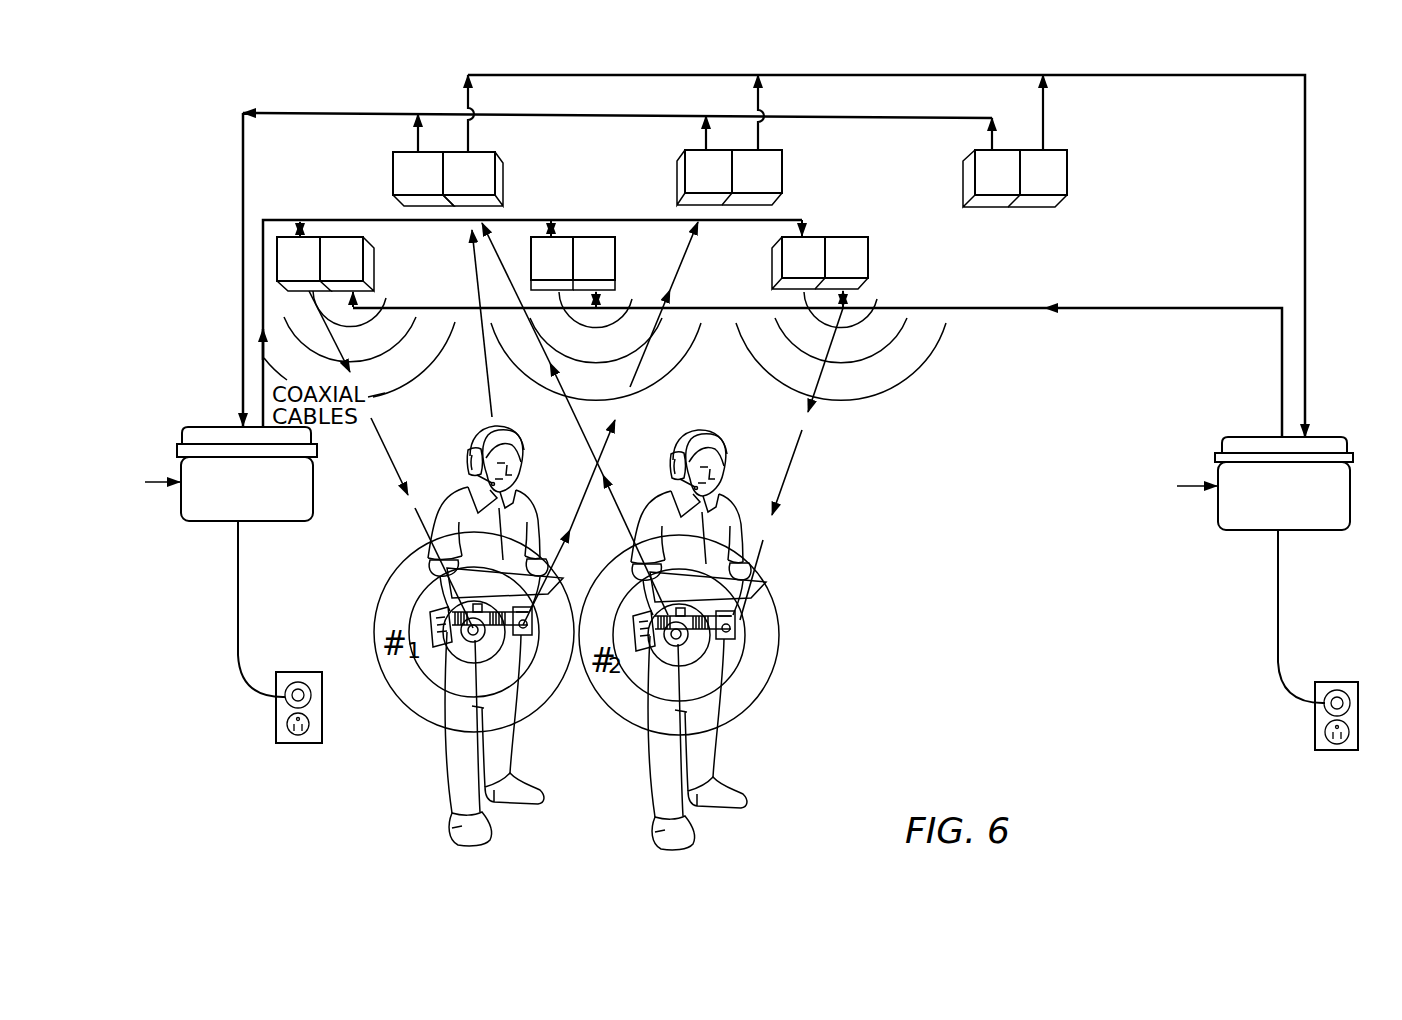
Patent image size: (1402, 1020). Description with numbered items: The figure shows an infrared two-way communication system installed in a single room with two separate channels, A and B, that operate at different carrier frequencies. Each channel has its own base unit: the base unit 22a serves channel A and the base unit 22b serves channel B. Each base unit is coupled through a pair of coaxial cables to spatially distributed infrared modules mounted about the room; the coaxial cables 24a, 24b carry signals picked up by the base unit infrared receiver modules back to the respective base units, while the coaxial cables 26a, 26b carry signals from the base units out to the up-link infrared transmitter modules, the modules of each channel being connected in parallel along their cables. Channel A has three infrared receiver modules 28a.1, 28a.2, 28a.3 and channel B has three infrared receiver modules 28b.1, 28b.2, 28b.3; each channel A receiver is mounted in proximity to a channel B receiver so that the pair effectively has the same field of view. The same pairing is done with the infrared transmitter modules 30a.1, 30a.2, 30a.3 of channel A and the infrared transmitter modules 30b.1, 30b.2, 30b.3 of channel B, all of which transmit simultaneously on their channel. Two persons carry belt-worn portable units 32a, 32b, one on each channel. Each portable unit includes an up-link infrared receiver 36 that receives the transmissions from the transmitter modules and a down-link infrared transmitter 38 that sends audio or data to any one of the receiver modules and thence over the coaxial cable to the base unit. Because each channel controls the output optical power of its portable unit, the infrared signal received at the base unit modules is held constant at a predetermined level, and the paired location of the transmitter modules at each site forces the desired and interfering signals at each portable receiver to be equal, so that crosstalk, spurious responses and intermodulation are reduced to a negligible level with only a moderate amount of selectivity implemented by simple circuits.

The base unit 22a is at (190, 523).
The base unit 22b is at (1218, 508).
The coaxial cable 24a is at (298, 113).
The coaxial cable 24b is at (1306, 359).
The coaxial cable 26a is at (274, 218).
The coaxial cable 26b is at (1178, 309).
The infrared receiver module 28a.1 is at (393, 178).
The infrared receiver module 28a.2 is at (677, 180).
The infrared receiver module 28a.3 is at (965, 180).
The infrared receiver module 28b.1 is at (1070, 167).
The infrared receiver module 28b.2 is at (784, 165).
The infrared receiver module 28b.3 is at (496, 165).
The infrared transmitter module 30a.1 is at (278, 260).
The infrared transmitter module 30a.2 is at (531, 244).
The infrared transmitter module 30a.3 is at (782, 256).
The infrared transmitter module 30b.1 is at (870, 263).
The infrared transmitter module 30b.2 is at (618, 266).
The infrared transmitter module 30b.3 is at (374, 272).
The portable unit 32a is at (538, 650).
The portable unit 32b is at (713, 643).
The up-link infrared receiver 36 is at (748, 640).
The down-link infrared transmitter 38 is at (663, 660).